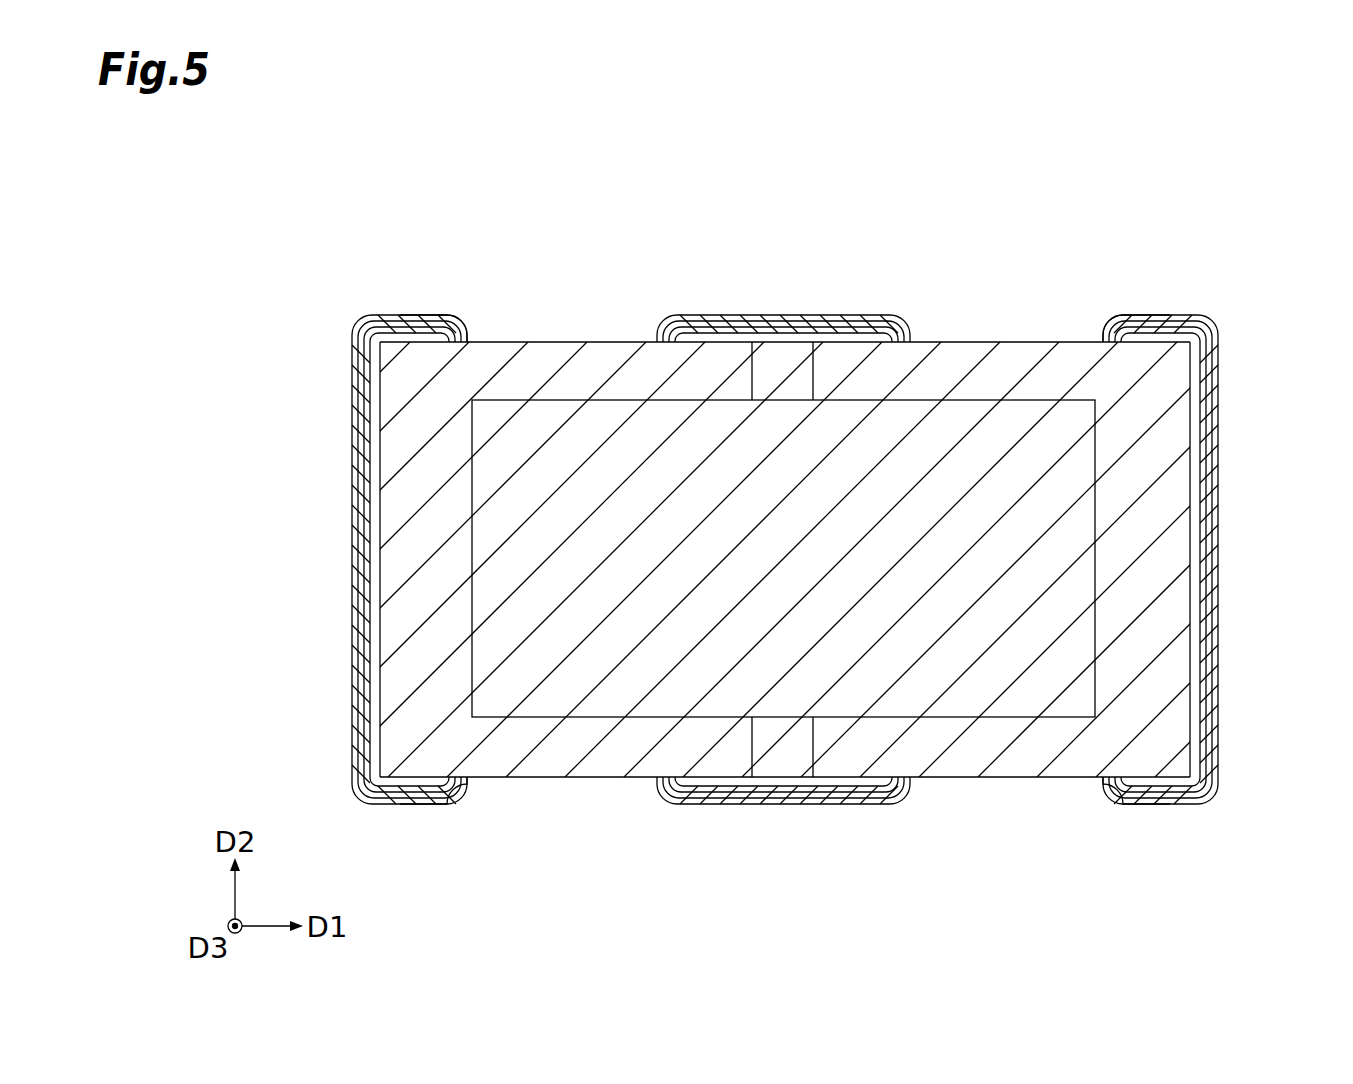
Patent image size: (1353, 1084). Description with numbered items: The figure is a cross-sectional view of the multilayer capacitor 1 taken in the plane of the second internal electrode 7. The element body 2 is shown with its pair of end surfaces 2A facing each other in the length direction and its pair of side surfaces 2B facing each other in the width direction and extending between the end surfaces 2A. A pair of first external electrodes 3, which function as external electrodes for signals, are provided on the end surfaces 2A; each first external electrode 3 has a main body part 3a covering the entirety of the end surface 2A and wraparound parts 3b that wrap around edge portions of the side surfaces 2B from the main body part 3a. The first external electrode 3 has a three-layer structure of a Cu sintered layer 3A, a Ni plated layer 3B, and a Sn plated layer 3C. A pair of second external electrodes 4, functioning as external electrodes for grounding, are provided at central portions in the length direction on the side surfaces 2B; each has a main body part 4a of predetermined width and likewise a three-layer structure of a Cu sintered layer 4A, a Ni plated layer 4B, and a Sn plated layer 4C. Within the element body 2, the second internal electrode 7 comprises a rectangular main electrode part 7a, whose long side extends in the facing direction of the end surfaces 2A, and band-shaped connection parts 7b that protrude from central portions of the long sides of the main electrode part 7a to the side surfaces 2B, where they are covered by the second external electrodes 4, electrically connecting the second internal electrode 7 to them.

The multilayer capacitor 1 is at (347, 186).
The element body 2 is at (531, 322).
The end surface 2A is at (378, 622).
The side surface 2B is at (603, 342).
The first external electrode 3 is at (331, 531).
The main body part 3a is at (356, 576).
The Cu sintered layer 3A is at (362, 674).
The Ni plated layer 3B is at (366, 705).
The Sn plated layer 3C is at (354, 735).
The wraparound part 3b is at (433, 318).
The second external electrode 4 is at (661, 298).
The main body part 4a is at (716, 336).
The Cu sintered layer 4A is at (790, 330).
The Ni plated layer 4B is at (838, 325).
The Sn plated layer 4C is at (890, 318).
The second internal electrode 7 is at (933, 382).
The main electrode part 7a is at (925, 640).
The connection part 7b is at (783, 365).